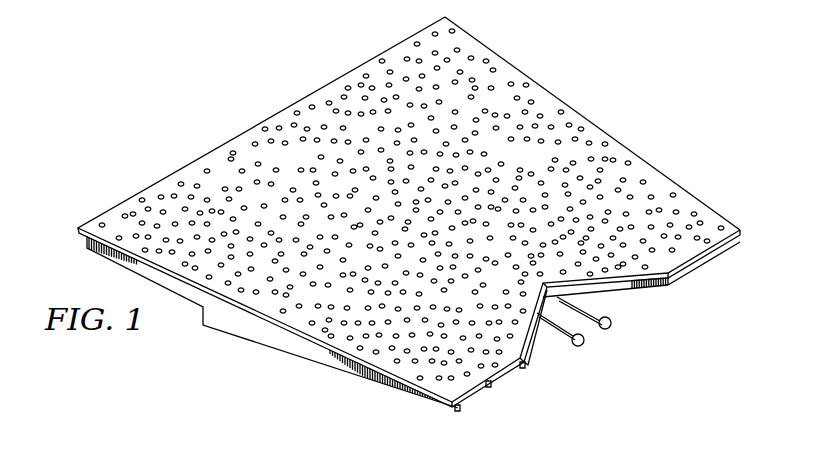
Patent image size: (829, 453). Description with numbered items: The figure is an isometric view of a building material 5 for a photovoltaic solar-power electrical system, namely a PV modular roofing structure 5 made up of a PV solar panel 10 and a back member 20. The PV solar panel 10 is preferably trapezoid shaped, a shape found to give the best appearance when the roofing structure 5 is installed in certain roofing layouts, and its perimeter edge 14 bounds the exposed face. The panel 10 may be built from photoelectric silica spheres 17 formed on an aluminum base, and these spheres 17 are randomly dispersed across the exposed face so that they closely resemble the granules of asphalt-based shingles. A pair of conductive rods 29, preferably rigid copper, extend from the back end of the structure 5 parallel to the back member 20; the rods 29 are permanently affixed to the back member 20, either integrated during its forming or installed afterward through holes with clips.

The PV modular roofing structure 5 is at (211, 84).
The PV solar panel 10 is at (507, 62).
The plate edge 14 is at (562, 100).
The photoelectric silica spheres 17 is at (125, 213).
The back member 20 is at (237, 323).
The conductive rods 29 is at (611, 321).